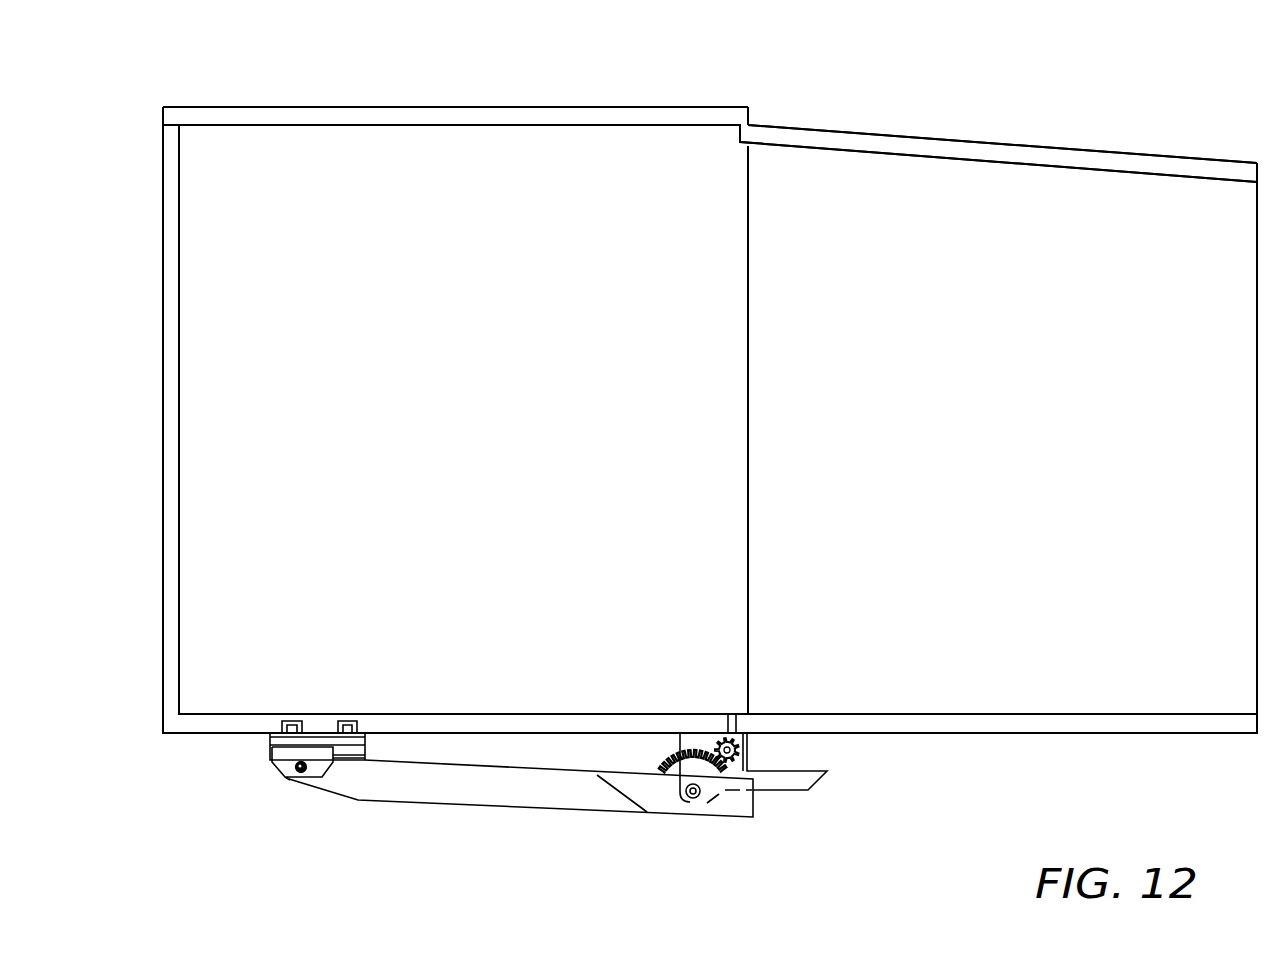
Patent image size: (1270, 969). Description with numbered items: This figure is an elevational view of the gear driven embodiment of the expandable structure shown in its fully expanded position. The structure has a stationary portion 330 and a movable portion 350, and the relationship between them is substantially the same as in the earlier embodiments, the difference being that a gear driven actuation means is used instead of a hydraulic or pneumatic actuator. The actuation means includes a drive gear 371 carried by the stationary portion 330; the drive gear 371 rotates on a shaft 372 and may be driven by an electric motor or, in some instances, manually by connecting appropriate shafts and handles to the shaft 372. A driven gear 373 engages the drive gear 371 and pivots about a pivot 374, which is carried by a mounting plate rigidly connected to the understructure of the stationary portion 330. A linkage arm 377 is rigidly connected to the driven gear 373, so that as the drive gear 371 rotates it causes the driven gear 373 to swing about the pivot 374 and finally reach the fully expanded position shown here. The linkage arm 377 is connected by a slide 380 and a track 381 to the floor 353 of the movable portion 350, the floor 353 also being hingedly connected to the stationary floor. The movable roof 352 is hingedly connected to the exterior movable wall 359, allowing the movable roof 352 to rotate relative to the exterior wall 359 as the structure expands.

The movable portion 350 is at (334, 107).
The movable roof 352 is at (571, 115).
The stationary portion 330 is at (1007, 143).
The exterior movable wall 359 is at (168, 305).
The floor 353 is at (430, 722).
The track 381 is at (272, 732).
The slide 380 is at (287, 760).
The linkage arm 377 is at (506, 791).
The driven gear 373 is at (658, 758).
The drive gear 371 is at (716, 742).
The shaft 372 is at (741, 740).
The pivot 374 is at (694, 799).